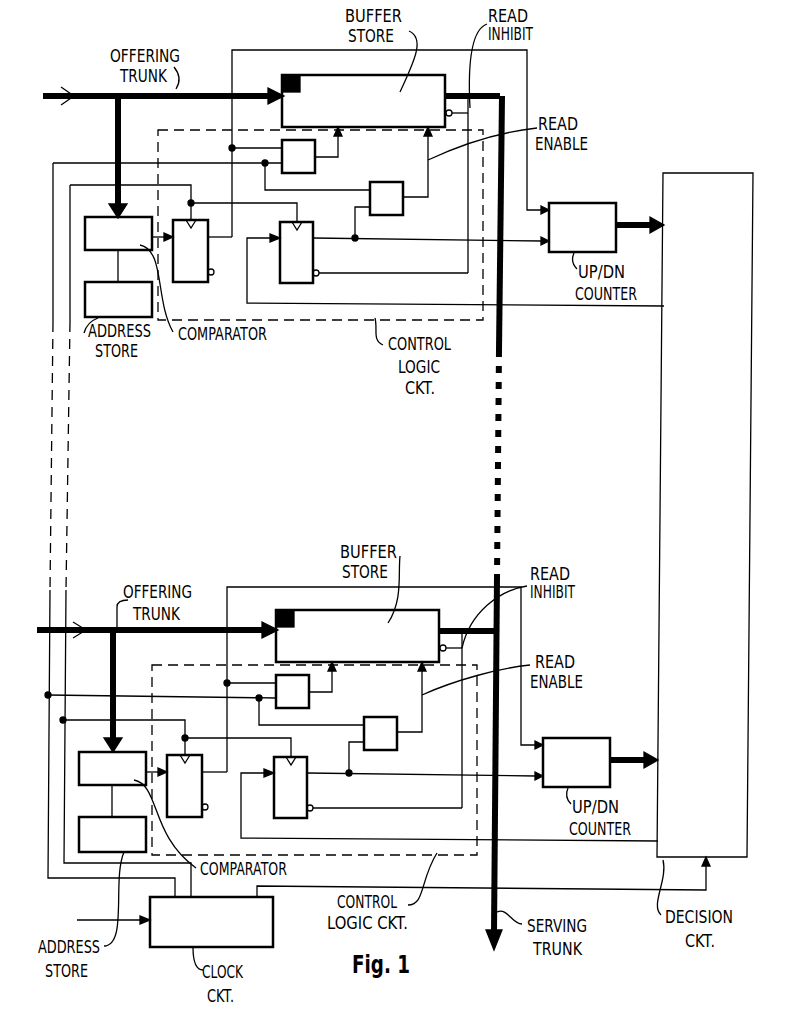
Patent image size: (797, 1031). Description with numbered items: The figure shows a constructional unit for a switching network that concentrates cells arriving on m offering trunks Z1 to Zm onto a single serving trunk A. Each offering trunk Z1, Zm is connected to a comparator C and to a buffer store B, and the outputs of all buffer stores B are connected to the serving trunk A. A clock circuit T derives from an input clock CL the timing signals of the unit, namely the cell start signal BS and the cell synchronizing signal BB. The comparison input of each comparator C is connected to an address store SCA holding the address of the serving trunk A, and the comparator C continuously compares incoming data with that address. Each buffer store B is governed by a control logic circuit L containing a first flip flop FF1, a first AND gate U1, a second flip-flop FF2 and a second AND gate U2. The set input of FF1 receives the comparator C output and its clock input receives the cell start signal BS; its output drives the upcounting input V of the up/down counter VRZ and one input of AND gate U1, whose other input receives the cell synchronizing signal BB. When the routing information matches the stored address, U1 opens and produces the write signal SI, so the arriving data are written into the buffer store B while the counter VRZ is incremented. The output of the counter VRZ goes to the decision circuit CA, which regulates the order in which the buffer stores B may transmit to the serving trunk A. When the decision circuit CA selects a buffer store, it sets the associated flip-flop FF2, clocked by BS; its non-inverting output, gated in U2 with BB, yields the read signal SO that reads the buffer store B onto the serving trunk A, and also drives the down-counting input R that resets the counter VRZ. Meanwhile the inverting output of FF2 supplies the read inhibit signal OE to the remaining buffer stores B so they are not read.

The offering trunk Z1 is at (163, 130).
The offering trunk Zm is at (157, 670).
The buffer store B is at (360, 368).
The comparator C is at (115, 501).
The address store SCA is at (115, 551).
The first flip flop FF1 is at (190, 518).
The second flip-flop FF2 is at (296, 520).
The first AND gate U1 is at (312, 176).
The second AND gate U2 is at (400, 217).
The write signal SI is at (337, 409).
The read signal SO is at (427, 430).
The read inhibit signal OE is at (468, 452).
The control logic circuit L is at (309, 316).
The up/down counter VRZ is at (603, 495).
The upcounting input V is at (533, 458).
The down-counting input R is at (535, 529).
The decision circuit CA is at (697, 188).
The decision circuit output Ae is at (497, 877).
The serving trunk A is at (502, 525).
The cell synchronizing signal BB is at (54, 408).
The cell start signal BS is at (68, 455).
The clock circuit T is at (211, 922).
The input clock CL is at (113, 909).